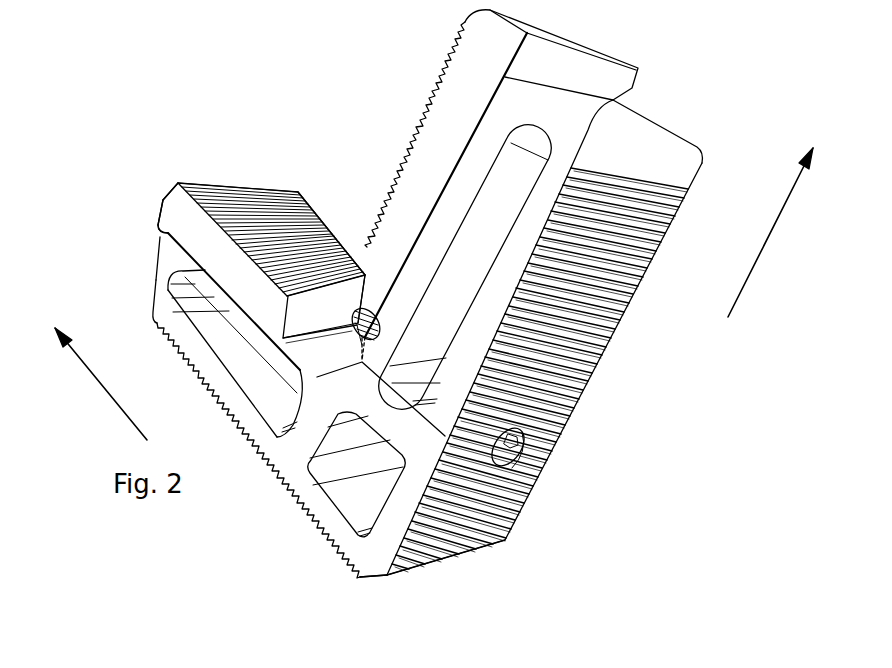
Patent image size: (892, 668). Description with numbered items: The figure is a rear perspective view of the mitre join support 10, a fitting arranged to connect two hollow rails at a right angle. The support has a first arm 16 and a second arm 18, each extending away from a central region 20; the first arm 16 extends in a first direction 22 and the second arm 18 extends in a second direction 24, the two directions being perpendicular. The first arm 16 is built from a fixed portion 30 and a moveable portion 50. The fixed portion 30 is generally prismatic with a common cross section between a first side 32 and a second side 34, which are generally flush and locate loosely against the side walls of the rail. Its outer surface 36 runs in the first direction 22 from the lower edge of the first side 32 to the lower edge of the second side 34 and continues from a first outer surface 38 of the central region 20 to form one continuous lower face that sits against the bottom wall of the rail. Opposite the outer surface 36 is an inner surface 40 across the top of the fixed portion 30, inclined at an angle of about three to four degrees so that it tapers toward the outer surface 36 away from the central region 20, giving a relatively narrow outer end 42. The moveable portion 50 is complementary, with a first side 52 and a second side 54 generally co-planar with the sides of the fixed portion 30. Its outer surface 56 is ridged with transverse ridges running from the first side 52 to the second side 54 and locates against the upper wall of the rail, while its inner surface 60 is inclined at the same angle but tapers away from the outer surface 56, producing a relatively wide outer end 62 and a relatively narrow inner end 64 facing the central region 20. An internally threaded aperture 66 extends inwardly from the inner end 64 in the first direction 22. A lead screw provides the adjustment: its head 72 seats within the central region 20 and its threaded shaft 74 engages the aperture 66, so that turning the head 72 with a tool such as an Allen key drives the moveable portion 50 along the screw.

The mitre join support 10 is at (612, 106).
The first arm 16 is at (263, 436).
The second arm 18 is at (677, 182).
The central region 20 is at (377, 553).
The first direction 22 is at (94, 384).
The second direction 24 is at (770, 238).
The fixed portion 30 is at (183, 347).
The first side 32 is at (158, 312).
The second side 34 is at (523, 507).
The outer surface 36 is at (240, 436).
The first outer surface 38 is at (333, 547).
The inner surface 40 is at (293, 345).
The outer end 42 is at (158, 273).
The moveable portion 50 is at (280, 213).
The first side 52 is at (173, 225).
The second side 54 is at (307, 203).
The outer surface 56 is at (233, 193).
The inner surface 60 is at (162, 238).
The outer end 62 is at (167, 190).
The inner end 64 is at (347, 300).
The internally threaded aperture 66 is at (362, 335).
The head 72 is at (507, 433).
The threaded shaft 74 is at (380, 323).